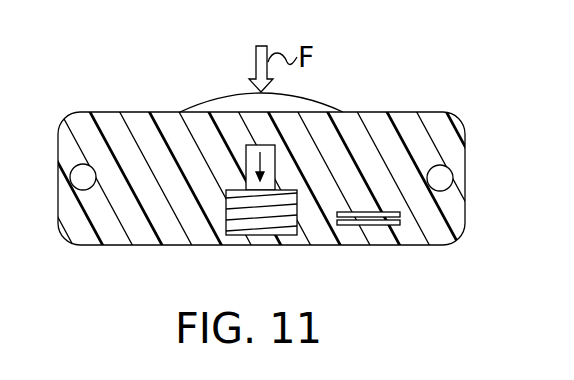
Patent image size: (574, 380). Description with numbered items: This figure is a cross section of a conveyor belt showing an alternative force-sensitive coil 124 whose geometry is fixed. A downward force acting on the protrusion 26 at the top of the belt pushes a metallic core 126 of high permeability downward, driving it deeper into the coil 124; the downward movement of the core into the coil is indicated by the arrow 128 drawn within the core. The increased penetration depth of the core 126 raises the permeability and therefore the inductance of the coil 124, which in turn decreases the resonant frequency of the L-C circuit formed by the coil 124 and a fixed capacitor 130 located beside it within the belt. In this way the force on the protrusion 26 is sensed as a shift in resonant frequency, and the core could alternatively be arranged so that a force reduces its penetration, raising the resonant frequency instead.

The protrusion 26 is at (318, 100).
The metallic core 126 is at (228, 112).
The plunger 128 is at (252, 158).
The force-sensitive coil 124 is at (283, 235).
The fixed capacitor 130 is at (390, 222).